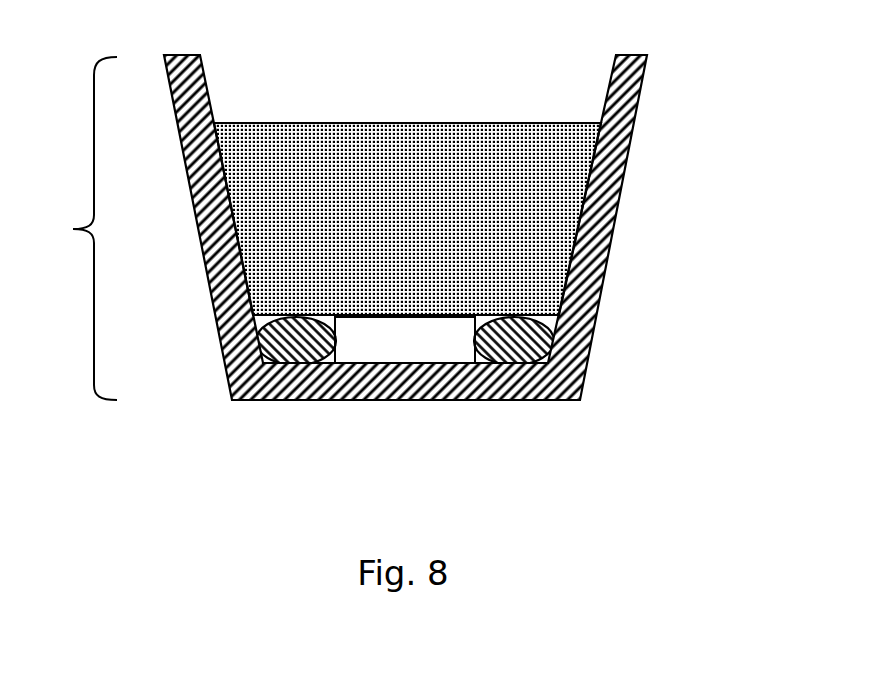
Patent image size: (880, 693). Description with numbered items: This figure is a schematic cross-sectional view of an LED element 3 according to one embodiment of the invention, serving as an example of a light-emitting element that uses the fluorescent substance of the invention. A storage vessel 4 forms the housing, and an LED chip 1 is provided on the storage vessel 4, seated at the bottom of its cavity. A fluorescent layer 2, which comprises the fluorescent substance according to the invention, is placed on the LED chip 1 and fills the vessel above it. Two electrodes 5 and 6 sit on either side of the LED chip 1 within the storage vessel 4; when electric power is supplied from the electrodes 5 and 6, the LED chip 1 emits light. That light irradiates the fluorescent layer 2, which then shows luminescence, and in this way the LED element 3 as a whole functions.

The LED chip 1 is at (403, 340).
The fluorescent layer 2 is at (523, 192).
The LED element 3 is at (67, 228).
The storage vessel 4 is at (603, 266).
The electrode 5 is at (298, 342).
The electrode 6 is at (520, 340).